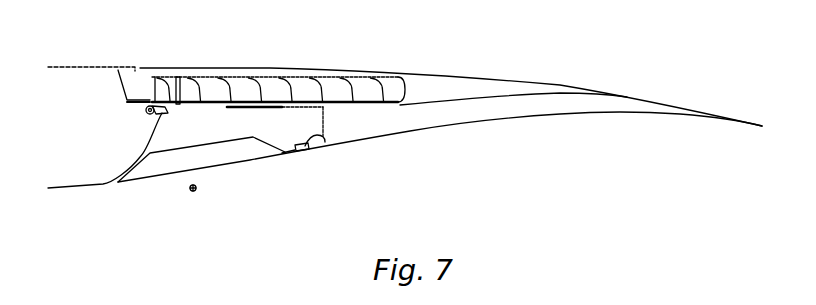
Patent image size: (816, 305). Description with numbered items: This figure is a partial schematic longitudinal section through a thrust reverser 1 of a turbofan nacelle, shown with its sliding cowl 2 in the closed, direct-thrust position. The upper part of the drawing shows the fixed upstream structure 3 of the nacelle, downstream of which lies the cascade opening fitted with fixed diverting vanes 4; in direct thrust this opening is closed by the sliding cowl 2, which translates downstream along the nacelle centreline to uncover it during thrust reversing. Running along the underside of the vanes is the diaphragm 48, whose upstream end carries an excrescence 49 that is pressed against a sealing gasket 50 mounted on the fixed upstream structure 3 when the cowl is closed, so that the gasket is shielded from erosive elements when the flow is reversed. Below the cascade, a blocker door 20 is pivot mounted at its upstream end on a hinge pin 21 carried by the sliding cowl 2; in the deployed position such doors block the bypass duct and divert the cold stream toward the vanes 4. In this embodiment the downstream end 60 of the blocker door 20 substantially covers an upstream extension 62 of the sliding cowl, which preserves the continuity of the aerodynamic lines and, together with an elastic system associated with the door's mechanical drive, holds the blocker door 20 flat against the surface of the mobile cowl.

The thrust reverser 1 is at (533, 64).
The sliding cowl 2 is at (614, 102).
The fixed upstream structure 3 is at (70, 86).
The diverting vanes 4 is at (332, 88).
The blocker door 20 is at (162, 163).
The hinge pin 21 is at (199, 190).
The diaphragm 48 is at (230, 100).
The excrescence 49 is at (178, 77).
The sealing gasket 50 is at (148, 106).
The downstream end of blocker door 60 is at (293, 152).
The upstream extension of the sliding cowl 62 is at (328, 141).